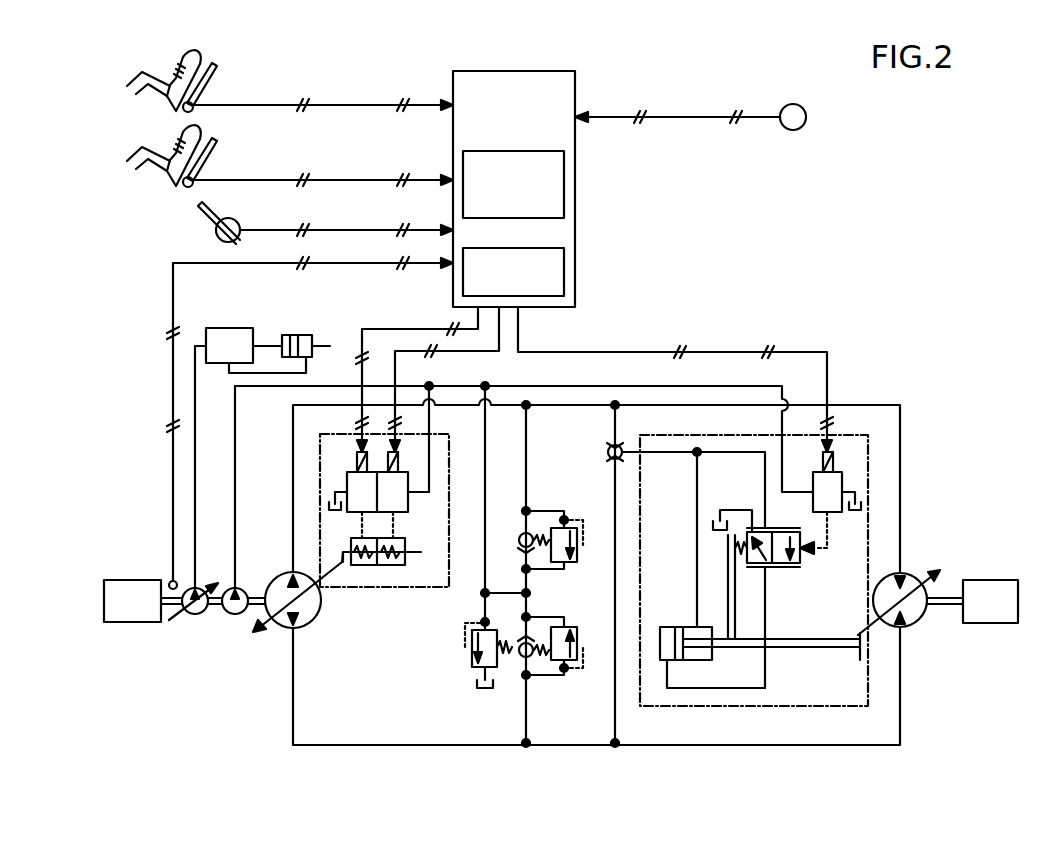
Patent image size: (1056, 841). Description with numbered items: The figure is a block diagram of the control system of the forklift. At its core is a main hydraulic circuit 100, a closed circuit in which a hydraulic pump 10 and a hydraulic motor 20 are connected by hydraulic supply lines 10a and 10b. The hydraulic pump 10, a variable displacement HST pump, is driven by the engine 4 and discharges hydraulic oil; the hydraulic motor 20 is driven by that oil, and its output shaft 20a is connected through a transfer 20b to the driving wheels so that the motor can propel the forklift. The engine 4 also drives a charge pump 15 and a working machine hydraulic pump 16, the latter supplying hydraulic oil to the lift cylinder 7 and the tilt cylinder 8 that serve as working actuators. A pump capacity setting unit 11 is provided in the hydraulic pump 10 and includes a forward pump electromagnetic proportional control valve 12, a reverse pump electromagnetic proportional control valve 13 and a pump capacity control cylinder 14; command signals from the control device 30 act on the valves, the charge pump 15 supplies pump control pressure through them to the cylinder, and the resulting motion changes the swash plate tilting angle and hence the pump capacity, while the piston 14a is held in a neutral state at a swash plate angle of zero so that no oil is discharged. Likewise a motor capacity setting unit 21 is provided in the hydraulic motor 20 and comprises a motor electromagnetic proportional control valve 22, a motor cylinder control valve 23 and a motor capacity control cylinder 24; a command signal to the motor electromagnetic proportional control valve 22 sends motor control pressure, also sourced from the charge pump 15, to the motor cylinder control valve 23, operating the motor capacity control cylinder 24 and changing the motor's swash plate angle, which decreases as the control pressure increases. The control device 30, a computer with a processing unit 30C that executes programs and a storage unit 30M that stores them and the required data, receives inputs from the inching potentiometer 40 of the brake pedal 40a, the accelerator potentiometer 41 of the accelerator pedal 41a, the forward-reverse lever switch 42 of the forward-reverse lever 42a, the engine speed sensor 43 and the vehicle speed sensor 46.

The main hydraulic circuit 100 is at (816, 758).
The engine 4 is at (121, 622).
The lift cylinder 7 is at (262, 445).
The tilt cylinder 8 is at (290, 334).
The hydraulic pump 10 is at (316, 618).
The hydraulic supply line 10a is at (549, 406).
The hydraulic supply line 10b is at (352, 744).
The pump capacity setting unit 11 is at (420, 588).
The forward pump electromagnetic proportional control valve 12 is at (405, 514).
The reverse pump electromagnetic proportional control valve 13 is at (351, 514).
The pump capacity control cylinder 14 is at (398, 566).
The piston 14a is at (377, 566).
The charge pump 15 is at (237, 614).
The working machine hydraulic pump 16 is at (195, 614).
The hydraulic motor 20 is at (906, 625).
The output shaft 20a is at (946, 606).
The transfer 20b is at (985, 580).
The motor capacity setting unit 21 is at (735, 706).
The motor electromagnetic proportional control valve 22 is at (838, 513).
The motor cylinder control valve 23 is at (791, 579).
The motor capacity control cylinder 24 is at (668, 627).
The control device 30 is at (527, 71).
The processing unit 30C is at (519, 151).
The storage unit 30M is at (519, 248).
The inching potentiometer 40 is at (290, 73).
The brake pedal 40a is at (215, 66).
The accelerator potentiometer 41 is at (290, 148).
The accelerator pedal 41a is at (215, 141).
The forward-reverse lever switch 42 is at (293, 219).
The forward-reverse lever 42a is at (200, 214).
The engine speed sensor 43 is at (170, 581).
The vehicle speed sensor 46 is at (806, 117).